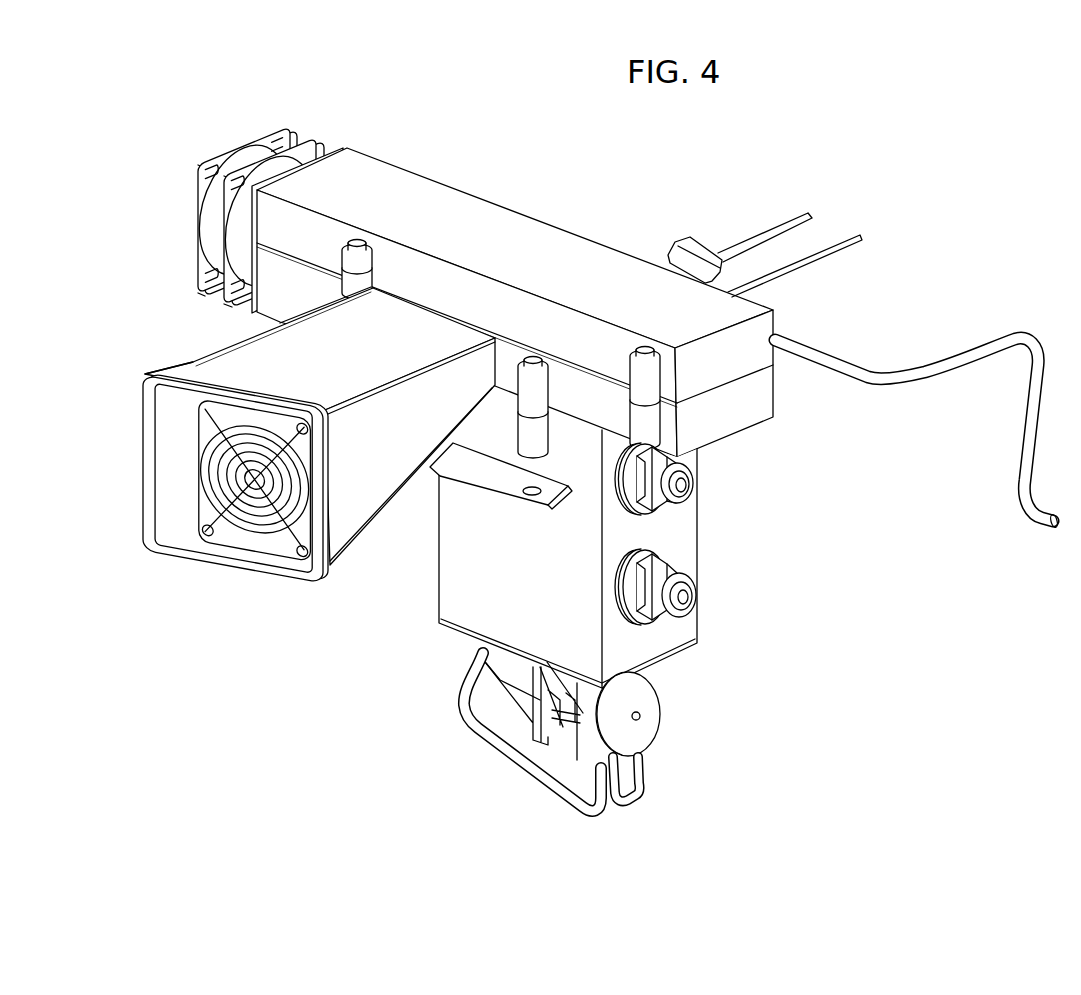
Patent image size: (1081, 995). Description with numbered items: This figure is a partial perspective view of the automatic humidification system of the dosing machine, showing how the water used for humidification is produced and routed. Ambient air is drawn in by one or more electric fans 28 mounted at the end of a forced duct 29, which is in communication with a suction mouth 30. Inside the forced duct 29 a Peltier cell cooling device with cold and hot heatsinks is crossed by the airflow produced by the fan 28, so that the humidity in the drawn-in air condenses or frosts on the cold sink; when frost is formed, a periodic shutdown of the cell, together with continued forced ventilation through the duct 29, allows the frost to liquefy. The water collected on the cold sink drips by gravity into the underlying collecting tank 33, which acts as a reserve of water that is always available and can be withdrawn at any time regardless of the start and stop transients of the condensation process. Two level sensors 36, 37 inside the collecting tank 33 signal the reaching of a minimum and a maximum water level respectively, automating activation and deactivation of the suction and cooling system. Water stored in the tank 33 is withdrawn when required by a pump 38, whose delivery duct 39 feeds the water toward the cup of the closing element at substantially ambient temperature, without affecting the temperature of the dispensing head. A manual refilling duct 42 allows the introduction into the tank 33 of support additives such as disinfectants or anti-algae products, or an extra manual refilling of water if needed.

The electric fan 28 is at (192, 220).
The forced duct 29 is at (382, 172).
The suction mouth 30 is at (343, 517).
The collecting tank 33 is at (462, 612).
The level sensor 36 is at (695, 583).
The level sensor 37 is at (695, 467).
The pump 38 is at (655, 715).
The delivery duct 39 is at (565, 795).
The manual refilling duct 42 is at (668, 252).